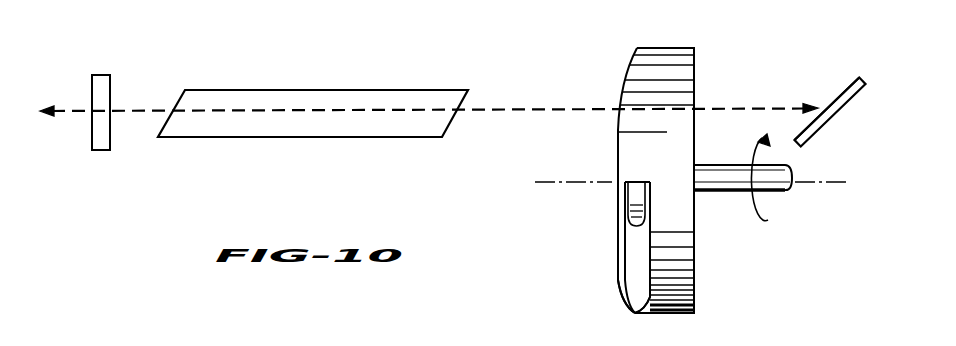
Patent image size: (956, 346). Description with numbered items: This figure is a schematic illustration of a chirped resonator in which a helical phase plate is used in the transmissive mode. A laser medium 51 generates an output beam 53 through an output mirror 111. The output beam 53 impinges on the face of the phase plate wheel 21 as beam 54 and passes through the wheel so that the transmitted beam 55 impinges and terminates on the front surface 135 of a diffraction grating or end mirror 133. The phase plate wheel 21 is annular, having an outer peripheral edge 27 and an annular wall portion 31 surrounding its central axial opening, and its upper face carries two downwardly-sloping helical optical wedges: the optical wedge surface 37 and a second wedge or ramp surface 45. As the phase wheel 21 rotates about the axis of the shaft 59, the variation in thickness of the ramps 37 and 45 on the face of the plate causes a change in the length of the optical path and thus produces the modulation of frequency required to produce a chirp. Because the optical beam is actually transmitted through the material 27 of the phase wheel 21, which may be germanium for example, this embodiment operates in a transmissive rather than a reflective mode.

The phase plate wheel 21 is at (707, 74).
The outer peripheral edge 27 is at (643, 315).
The annular wall portion 31 is at (627, 202).
The optical wedge surface 37 is at (633, 255).
The second wedge or ramp surface 45 is at (630, 60).
The laser medium 51 is at (290, 90).
The output beam 53 is at (72, 111).
The beam 54 is at (472, 111).
The transmitted beam 55 is at (790, 84).
The shaft 59 is at (785, 193).
The output mirror 111 is at (110, 92).
The diffraction grating or end mirror 133 is at (827, 122).
The front surface 135 is at (832, 92).